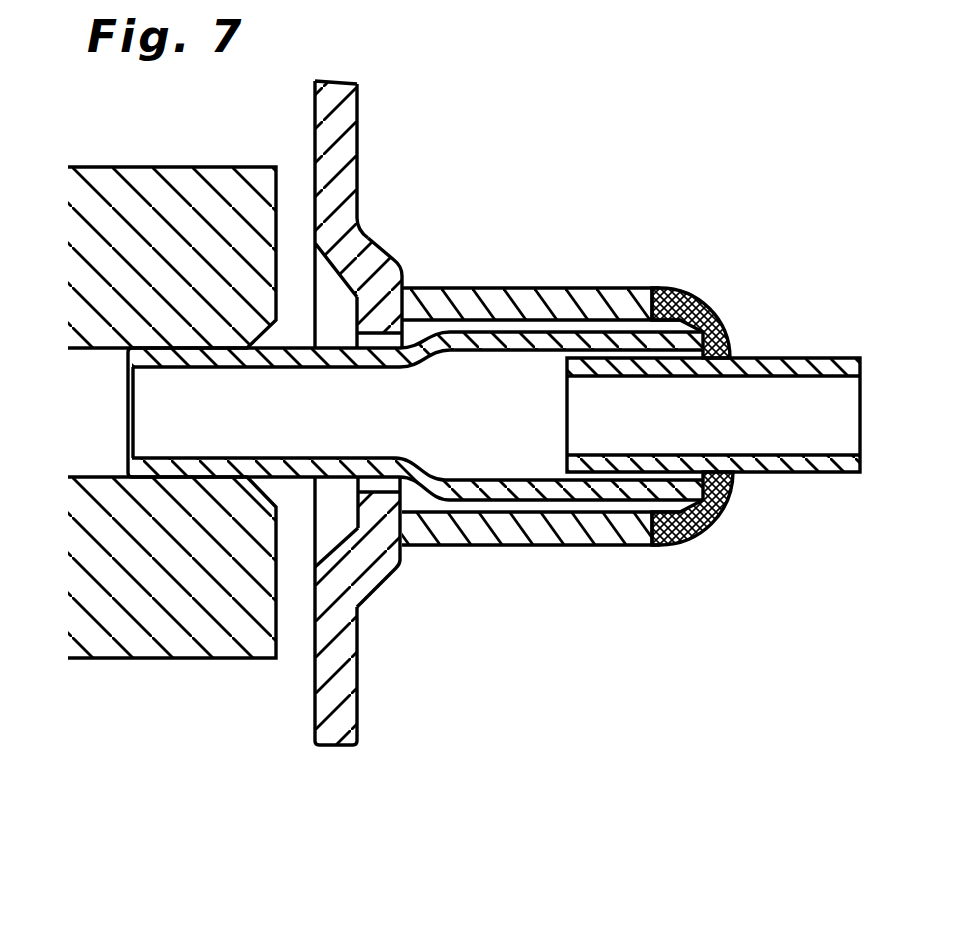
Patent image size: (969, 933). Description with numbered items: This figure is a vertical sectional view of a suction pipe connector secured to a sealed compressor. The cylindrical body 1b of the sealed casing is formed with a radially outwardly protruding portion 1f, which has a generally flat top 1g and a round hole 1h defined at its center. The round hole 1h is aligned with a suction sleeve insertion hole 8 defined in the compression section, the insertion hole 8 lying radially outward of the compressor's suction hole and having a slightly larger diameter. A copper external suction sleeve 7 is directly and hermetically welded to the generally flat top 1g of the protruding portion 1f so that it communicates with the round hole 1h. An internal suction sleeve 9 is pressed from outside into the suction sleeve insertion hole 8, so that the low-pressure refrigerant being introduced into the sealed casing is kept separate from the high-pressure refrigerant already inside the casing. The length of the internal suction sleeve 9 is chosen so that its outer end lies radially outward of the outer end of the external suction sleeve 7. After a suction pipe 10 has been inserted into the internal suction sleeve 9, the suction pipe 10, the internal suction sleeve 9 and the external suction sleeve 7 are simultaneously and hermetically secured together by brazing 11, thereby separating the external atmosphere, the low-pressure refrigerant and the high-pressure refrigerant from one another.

The cylindrical body 1b is at (335, 728).
The protruding portion 1f is at (368, 565).
The generally flat top 1g is at (403, 563).
The round hole 1h is at (380, 340).
The external suction sleeve 7 is at (613, 302).
The suction sleeve insertion hole 8 is at (88, 440).
The internal suction sleeve 9 is at (500, 343).
The suction pipe 10 is at (800, 370).
The brazing 11 is at (703, 305).